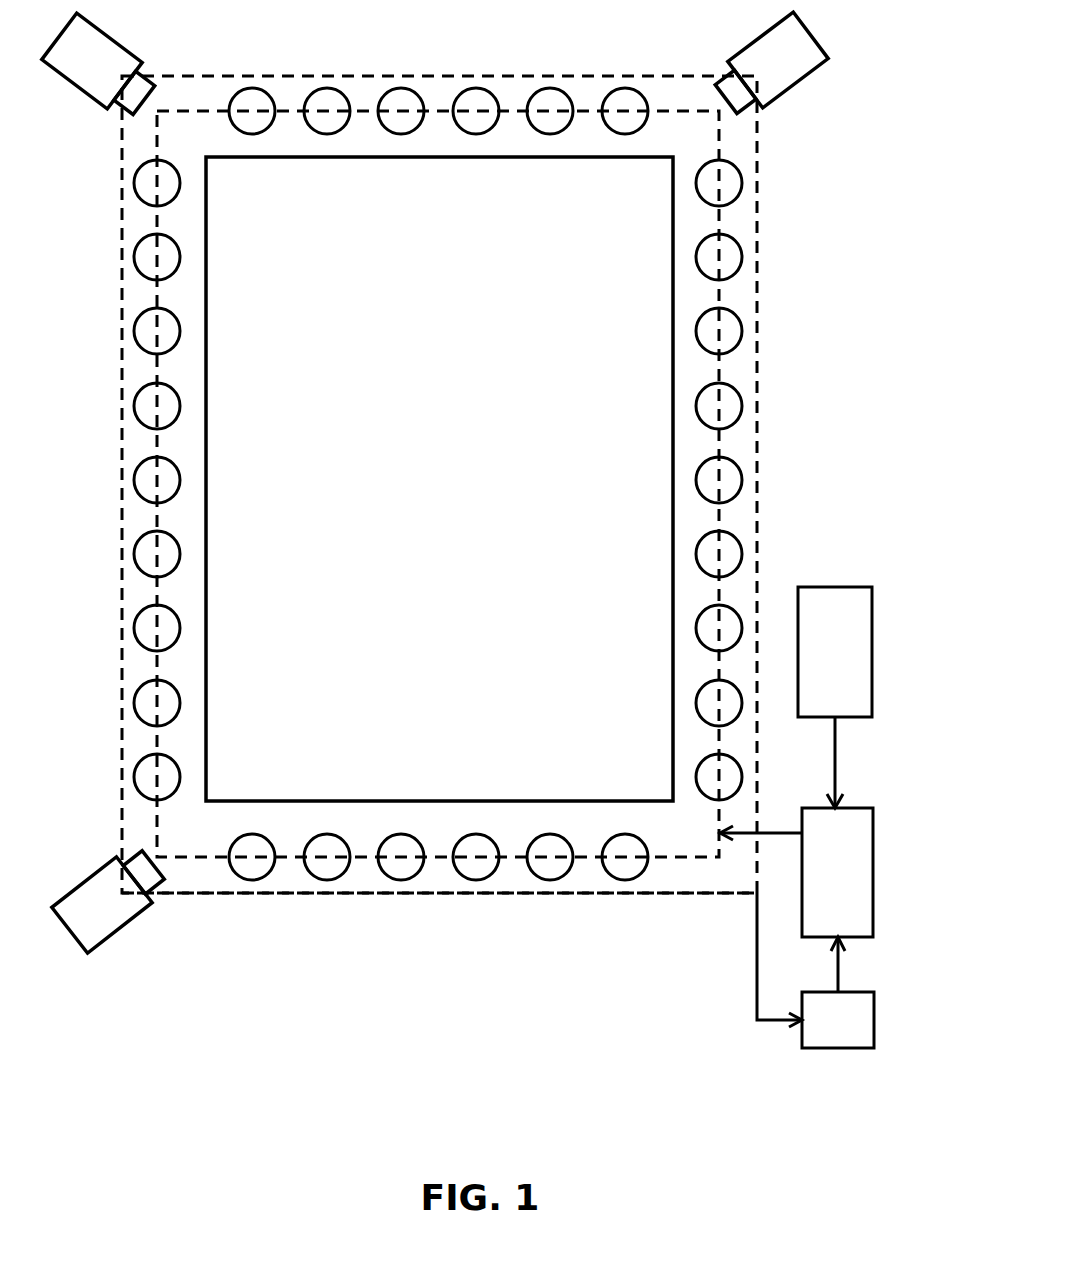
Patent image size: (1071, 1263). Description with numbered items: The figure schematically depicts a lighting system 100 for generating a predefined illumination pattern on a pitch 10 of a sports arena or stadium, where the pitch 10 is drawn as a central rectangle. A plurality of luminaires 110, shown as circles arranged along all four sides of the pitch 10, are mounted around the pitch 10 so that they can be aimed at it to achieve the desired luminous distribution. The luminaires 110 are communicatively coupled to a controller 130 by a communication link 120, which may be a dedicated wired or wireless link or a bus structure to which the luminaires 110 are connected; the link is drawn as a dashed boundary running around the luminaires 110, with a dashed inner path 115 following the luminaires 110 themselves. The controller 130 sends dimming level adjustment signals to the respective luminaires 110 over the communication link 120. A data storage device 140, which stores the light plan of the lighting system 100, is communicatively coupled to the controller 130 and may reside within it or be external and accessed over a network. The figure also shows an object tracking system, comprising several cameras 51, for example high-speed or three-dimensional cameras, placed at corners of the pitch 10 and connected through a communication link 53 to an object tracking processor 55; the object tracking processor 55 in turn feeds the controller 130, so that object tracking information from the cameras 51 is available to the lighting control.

The lighting system 100 is at (421, 1021).
The pitch 10 is at (673, 803).
The luminaires 110 is at (708, 183).
The inner sensor boundary 115 is at (182, 857).
The communication link 120 is at (757, 215).
The communication link 53 is at (583, 893).
The cameras 51 is at (41, 62).
The data storage device 140 is at (850, 662).
The controller 130 is at (853, 882).
The object tracking processor 55 is at (835, 1038).